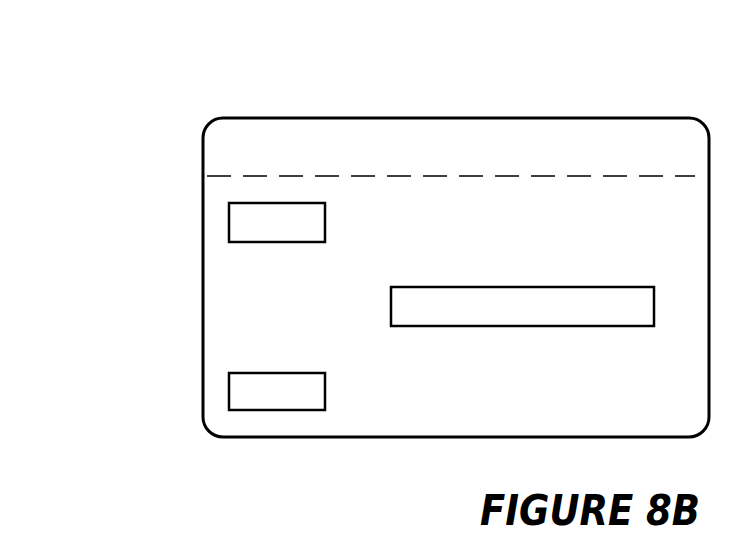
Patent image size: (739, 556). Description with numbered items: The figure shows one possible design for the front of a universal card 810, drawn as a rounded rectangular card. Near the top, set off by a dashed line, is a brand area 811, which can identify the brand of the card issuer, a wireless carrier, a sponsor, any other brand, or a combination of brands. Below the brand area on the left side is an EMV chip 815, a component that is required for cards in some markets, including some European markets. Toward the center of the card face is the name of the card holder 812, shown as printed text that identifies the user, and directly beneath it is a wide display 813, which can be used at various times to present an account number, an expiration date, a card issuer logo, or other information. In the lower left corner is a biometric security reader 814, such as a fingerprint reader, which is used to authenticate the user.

The front of universal card 810 is at (558, 104).
The brand area 811 is at (258, 148).
The name of the card holder 812 is at (390, 269).
The display 813 is at (390, 305).
The biometric security reader 814 is at (267, 410).
The EMV chip 815 is at (230, 213).